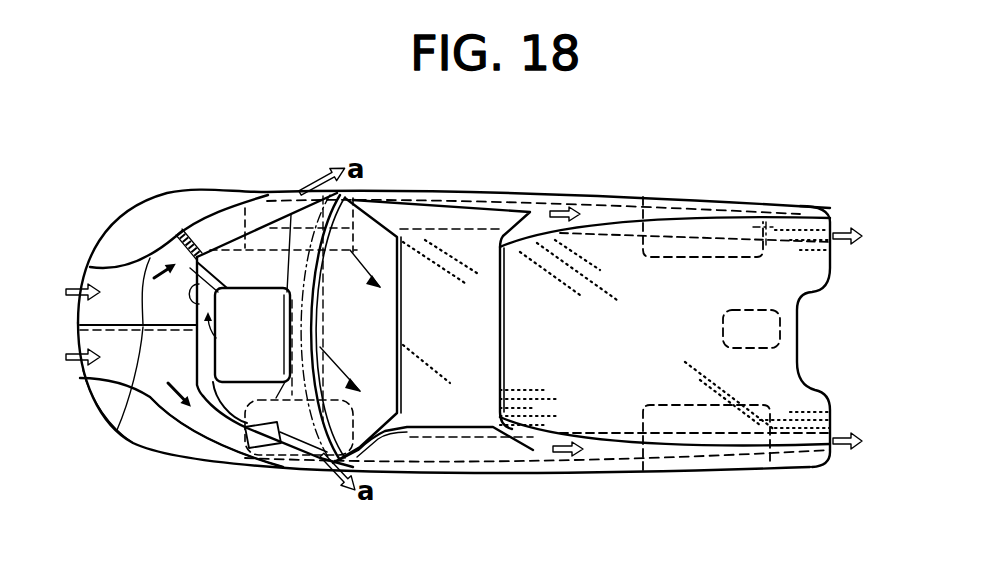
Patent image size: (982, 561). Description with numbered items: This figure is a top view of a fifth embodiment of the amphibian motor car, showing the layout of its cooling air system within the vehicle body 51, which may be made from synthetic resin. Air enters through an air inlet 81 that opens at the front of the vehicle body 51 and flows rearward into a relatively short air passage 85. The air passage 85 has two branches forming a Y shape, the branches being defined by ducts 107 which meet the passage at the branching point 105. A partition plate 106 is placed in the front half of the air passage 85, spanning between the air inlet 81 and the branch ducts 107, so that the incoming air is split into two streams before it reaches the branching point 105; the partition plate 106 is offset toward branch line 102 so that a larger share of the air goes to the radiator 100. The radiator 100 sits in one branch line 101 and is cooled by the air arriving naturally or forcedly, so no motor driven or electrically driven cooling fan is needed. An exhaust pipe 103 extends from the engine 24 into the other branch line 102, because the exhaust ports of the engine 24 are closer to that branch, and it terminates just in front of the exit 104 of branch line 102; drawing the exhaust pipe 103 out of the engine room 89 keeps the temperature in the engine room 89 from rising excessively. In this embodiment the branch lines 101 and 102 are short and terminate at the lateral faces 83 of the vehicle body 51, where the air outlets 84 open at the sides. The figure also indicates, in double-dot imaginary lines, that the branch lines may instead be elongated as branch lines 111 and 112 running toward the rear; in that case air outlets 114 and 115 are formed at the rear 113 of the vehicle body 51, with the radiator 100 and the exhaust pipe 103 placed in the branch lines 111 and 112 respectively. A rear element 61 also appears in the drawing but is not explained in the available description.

The vehicle body 51 is at (544, 186).
The engine 24 is at (290, 292).
The rear duct 61 is at (783, 338).
The air inlet 81 is at (80, 378).
The lateral faces 83 is at (263, 183).
The air outlets 84 is at (290, 189).
The air passage 85 is at (120, 263).
The engine room 89 is at (322, 350).
The radiator 100 is at (188, 232).
The branch line 101 is at (227, 225).
The branch line 102 is at (200, 434).
The exhaust pipe 103 is at (231, 447).
The exit 104 is at (293, 462).
The branching point 105 is at (222, 338).
The partition plate 106 is at (117, 431).
The ducts 107 is at (195, 292).
The elongated branch line 111 is at (635, 412).
The elongated branch line 112 is at (627, 235).
The rear of the vehicle body 113 is at (833, 205).
The air outlet 114 is at (835, 222).
The air outlet 115 is at (834, 457).